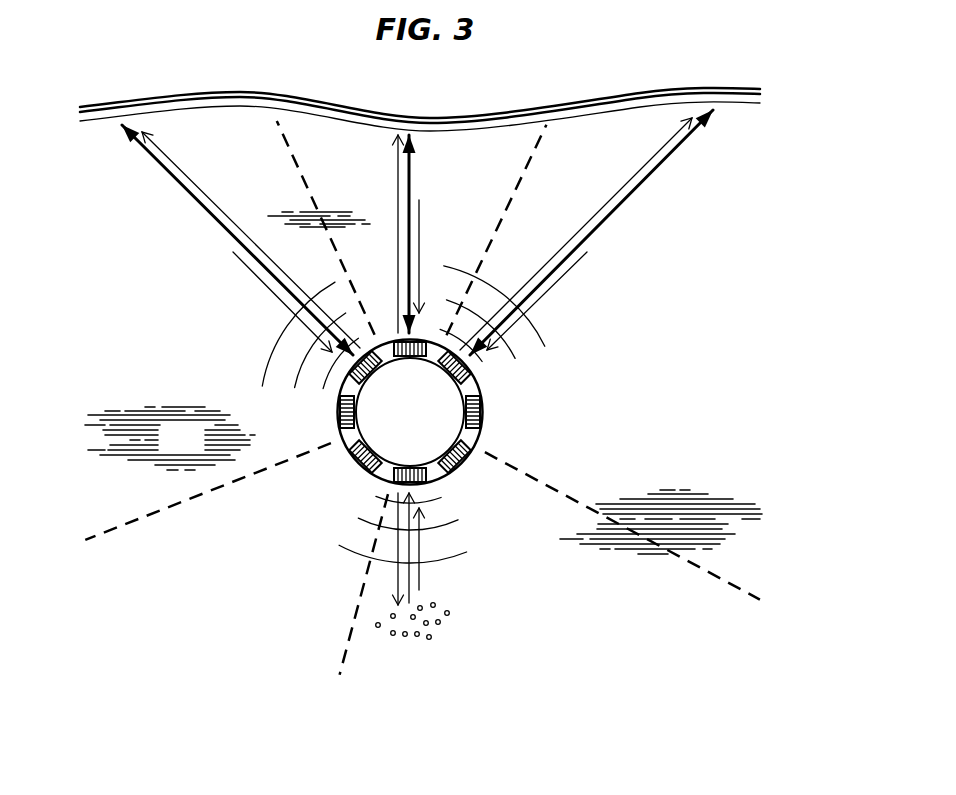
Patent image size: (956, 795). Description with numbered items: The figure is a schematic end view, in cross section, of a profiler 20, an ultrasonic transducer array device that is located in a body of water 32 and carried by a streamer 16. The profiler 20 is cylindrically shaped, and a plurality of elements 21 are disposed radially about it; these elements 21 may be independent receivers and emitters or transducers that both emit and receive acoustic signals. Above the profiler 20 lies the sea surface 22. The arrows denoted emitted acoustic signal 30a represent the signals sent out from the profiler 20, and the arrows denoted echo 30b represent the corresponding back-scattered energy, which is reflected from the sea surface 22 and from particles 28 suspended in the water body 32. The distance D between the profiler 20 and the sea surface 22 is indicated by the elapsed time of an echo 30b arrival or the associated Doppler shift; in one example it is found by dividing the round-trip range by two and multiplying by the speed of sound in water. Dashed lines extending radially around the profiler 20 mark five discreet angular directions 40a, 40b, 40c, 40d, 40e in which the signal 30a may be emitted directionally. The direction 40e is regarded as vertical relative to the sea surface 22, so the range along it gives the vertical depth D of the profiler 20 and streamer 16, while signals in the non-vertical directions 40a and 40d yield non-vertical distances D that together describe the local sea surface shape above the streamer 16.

The streamer 16 is at (394, 428).
The profiler 20 is at (492, 430).
The elements 21 is at (463, 367).
The sea surface 22 is at (216, 94).
The particles 28 is at (442, 632).
The emitted acoustic signal 30a is at (233, 223).
The echo 30b is at (420, 251).
The body of water 32 is at (200, 457).
The angular direction 40a is at (688, 402).
The angular direction 40b is at (598, 623).
The angular direction 40c is at (262, 623).
The angular direction 40d is at (178, 315).
The angular direction 40e is at (490, 177).
The distance D is at (180, 187).